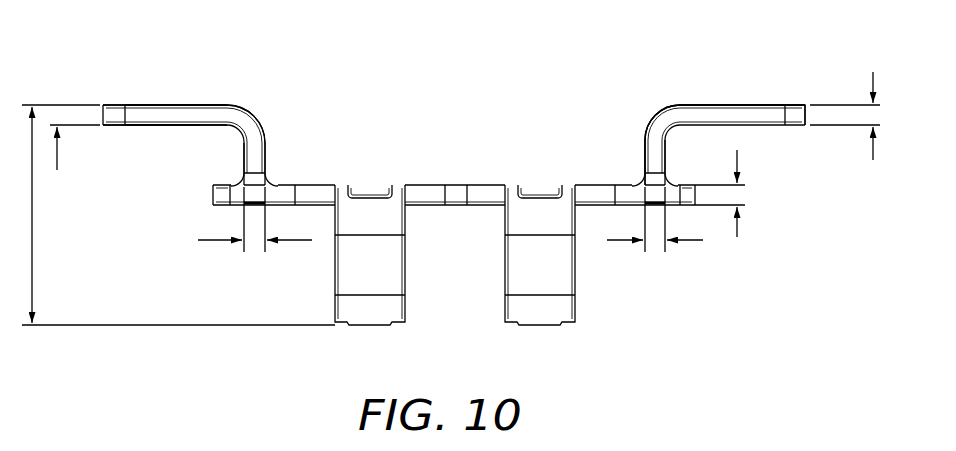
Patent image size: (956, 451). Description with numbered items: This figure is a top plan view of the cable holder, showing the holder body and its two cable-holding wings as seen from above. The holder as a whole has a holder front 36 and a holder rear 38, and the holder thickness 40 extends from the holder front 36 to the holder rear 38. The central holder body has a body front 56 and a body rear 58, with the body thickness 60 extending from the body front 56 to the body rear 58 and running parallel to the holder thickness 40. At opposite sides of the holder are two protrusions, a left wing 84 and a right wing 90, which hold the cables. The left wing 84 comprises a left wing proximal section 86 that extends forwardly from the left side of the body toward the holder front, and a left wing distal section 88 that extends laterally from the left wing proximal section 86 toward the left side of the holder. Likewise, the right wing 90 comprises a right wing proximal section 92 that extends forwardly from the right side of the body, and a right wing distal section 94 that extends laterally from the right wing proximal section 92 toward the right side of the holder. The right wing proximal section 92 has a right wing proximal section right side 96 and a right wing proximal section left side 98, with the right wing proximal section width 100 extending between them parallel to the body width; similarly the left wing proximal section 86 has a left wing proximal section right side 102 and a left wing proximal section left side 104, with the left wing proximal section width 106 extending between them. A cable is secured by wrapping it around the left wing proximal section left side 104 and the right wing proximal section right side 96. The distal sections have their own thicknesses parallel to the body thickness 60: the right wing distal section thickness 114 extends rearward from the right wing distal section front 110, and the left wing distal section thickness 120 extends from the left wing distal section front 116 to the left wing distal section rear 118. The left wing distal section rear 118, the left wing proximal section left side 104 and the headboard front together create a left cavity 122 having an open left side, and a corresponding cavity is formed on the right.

The holder front 36 is at (172, 104).
The holder rear 38 is at (365, 323).
The holder thickness 40 is at (33, 265).
The body front 56 is at (457, 184).
The body rear 58 is at (458, 206).
The body thickness 60 is at (738, 235).
The left wing 84 is at (212, 101).
The left wing proximal section 86 is at (262, 146).
The left wing distal section 88 is at (152, 129).
The right wing 90 is at (668, 76).
The right wing proximal section 92 is at (658, 139).
The right wing distal section 94 is at (775, 104).
The right wing proximal section right side 96 is at (667, 146).
The right wing proximal section left side 98 is at (644, 169).
The right wing proximal section width 100 is at (690, 243).
The left wing proximal section right side 102 is at (266, 161).
The left wing proximal section left side 104 is at (242, 158).
The left wing proximal section width 106 is at (218, 241).
The right wing distal section front 110 is at (708, 104).
The right wing distal section thickness 114 is at (873, 150).
The left wing distal section front 116 is at (130, 104).
The left wing distal section rear 118 is at (120, 127).
The left wing distal section thickness 120 is at (57, 103).
The left cavity 122 is at (205, 137).